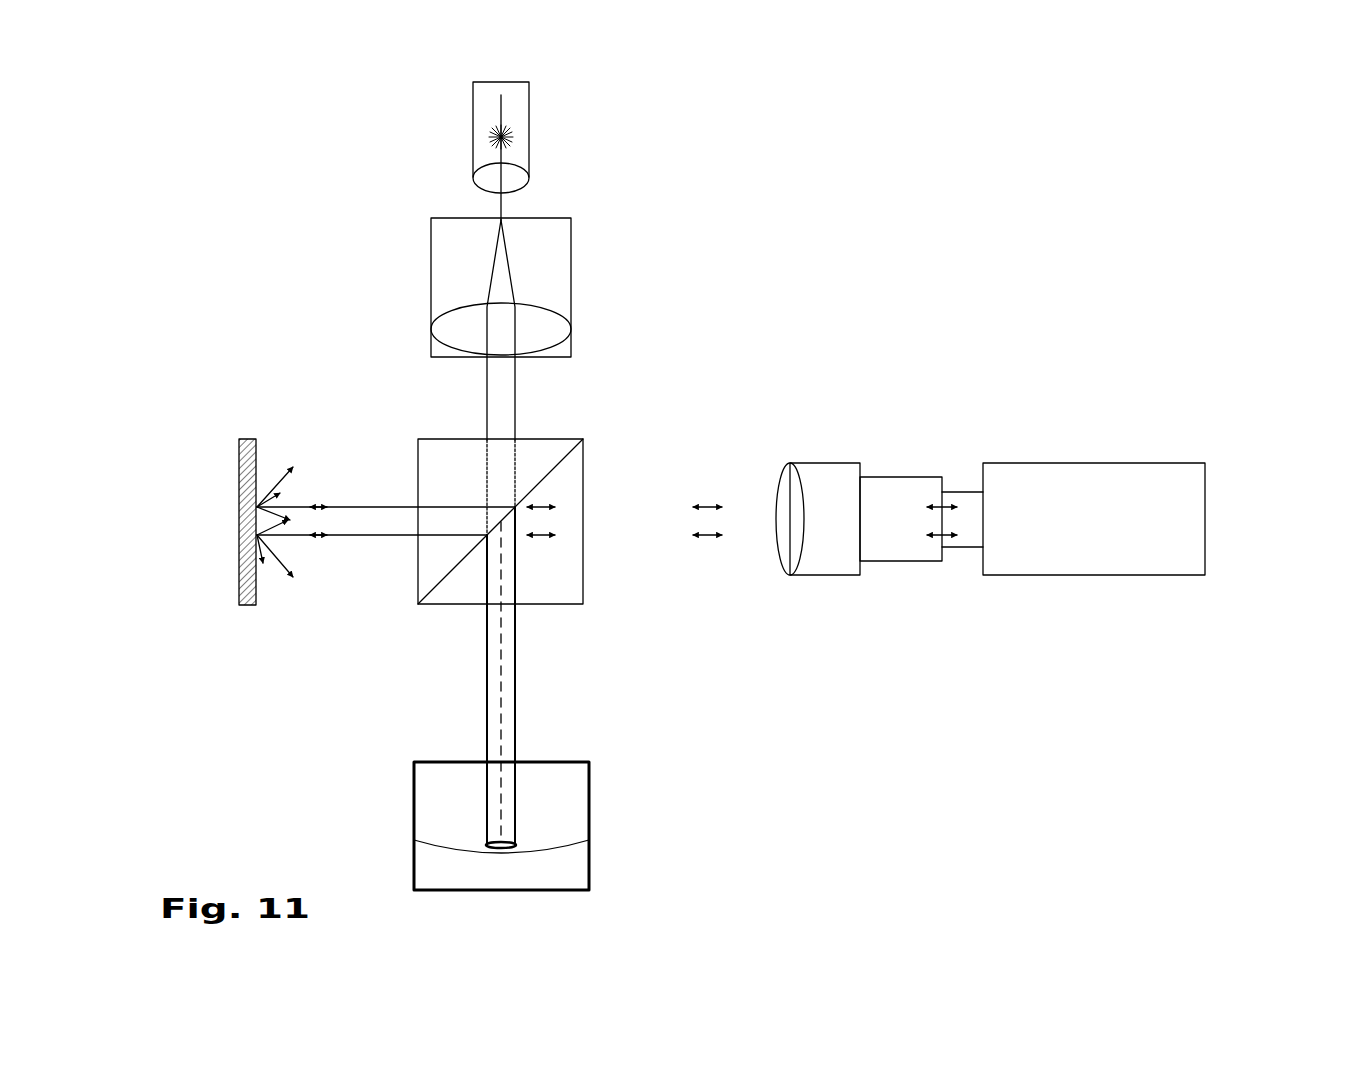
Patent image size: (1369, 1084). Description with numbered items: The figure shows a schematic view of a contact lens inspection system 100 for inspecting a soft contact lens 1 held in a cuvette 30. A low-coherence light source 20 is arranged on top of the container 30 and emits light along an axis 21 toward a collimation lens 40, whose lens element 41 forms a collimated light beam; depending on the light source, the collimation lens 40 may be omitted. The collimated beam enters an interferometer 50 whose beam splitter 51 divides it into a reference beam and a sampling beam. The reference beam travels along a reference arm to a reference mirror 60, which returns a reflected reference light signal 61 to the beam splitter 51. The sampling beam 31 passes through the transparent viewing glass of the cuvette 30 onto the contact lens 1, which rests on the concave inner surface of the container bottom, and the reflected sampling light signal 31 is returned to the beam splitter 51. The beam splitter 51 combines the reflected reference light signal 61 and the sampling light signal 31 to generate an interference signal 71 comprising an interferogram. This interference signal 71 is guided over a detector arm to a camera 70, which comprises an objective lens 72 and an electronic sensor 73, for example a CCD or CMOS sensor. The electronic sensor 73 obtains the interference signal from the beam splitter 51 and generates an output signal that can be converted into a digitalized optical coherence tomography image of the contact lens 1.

The contact lens 1 is at (510, 837).
The low-coherence light source 20 is at (533, 127).
The optical axis / emitted light 21 is at (503, 208).
The cuvette 30 is at (403, 826).
The sampling light signal 31 is at (515, 623).
The collimation lens 40 is at (430, 328).
The lens 41 is at (483, 402).
The interferometer 50 is at (442, 453).
The beam splitter 51 is at (560, 465).
The reference mirror 60 is at (250, 480).
The reflected reference light signal 61 is at (338, 537).
The camera 70 is at (1068, 592).
The interference signal 71 is at (709, 542).
The objective lens 72 is at (810, 575).
The electronic sensor 73 is at (1042, 575).
The contact lens inspection system 100 is at (915, 718).